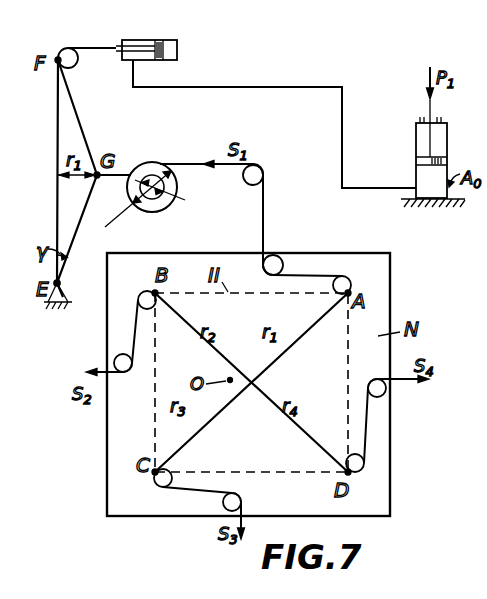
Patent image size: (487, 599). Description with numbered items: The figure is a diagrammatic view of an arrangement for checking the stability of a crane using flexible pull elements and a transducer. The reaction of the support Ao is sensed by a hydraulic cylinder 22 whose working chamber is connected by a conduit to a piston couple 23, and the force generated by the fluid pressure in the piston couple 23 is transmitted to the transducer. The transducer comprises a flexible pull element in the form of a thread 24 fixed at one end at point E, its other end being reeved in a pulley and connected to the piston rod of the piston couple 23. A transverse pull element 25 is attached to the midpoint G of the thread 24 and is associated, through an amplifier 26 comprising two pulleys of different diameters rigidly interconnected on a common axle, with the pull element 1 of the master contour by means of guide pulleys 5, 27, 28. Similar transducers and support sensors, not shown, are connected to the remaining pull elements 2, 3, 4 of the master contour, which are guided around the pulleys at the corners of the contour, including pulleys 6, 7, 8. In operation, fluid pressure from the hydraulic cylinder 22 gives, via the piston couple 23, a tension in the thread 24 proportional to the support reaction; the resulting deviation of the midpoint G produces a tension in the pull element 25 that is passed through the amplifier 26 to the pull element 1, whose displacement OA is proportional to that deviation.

The pull element 1 is at (304, 276).
The pull element 2 is at (135, 337).
The pull element 3 is at (206, 491).
The pull element 4 is at (366, 440).
The guide pulley 5 is at (355, 283).
The pulley at B 6 is at (141, 291).
The pulley at C 7 is at (154, 484).
The pulley at D 8 is at (362, 469).
The hydraulic cylinder 22 is at (413, 138).
The piston couple 23 is at (145, 40).
The thread 24 is at (66, 48).
The pull element 25 is at (123, 170).
The amplifier 26 is at (154, 172).
The guide pulley 27 is at (280, 262).
The guide pulley 28 is at (262, 166).